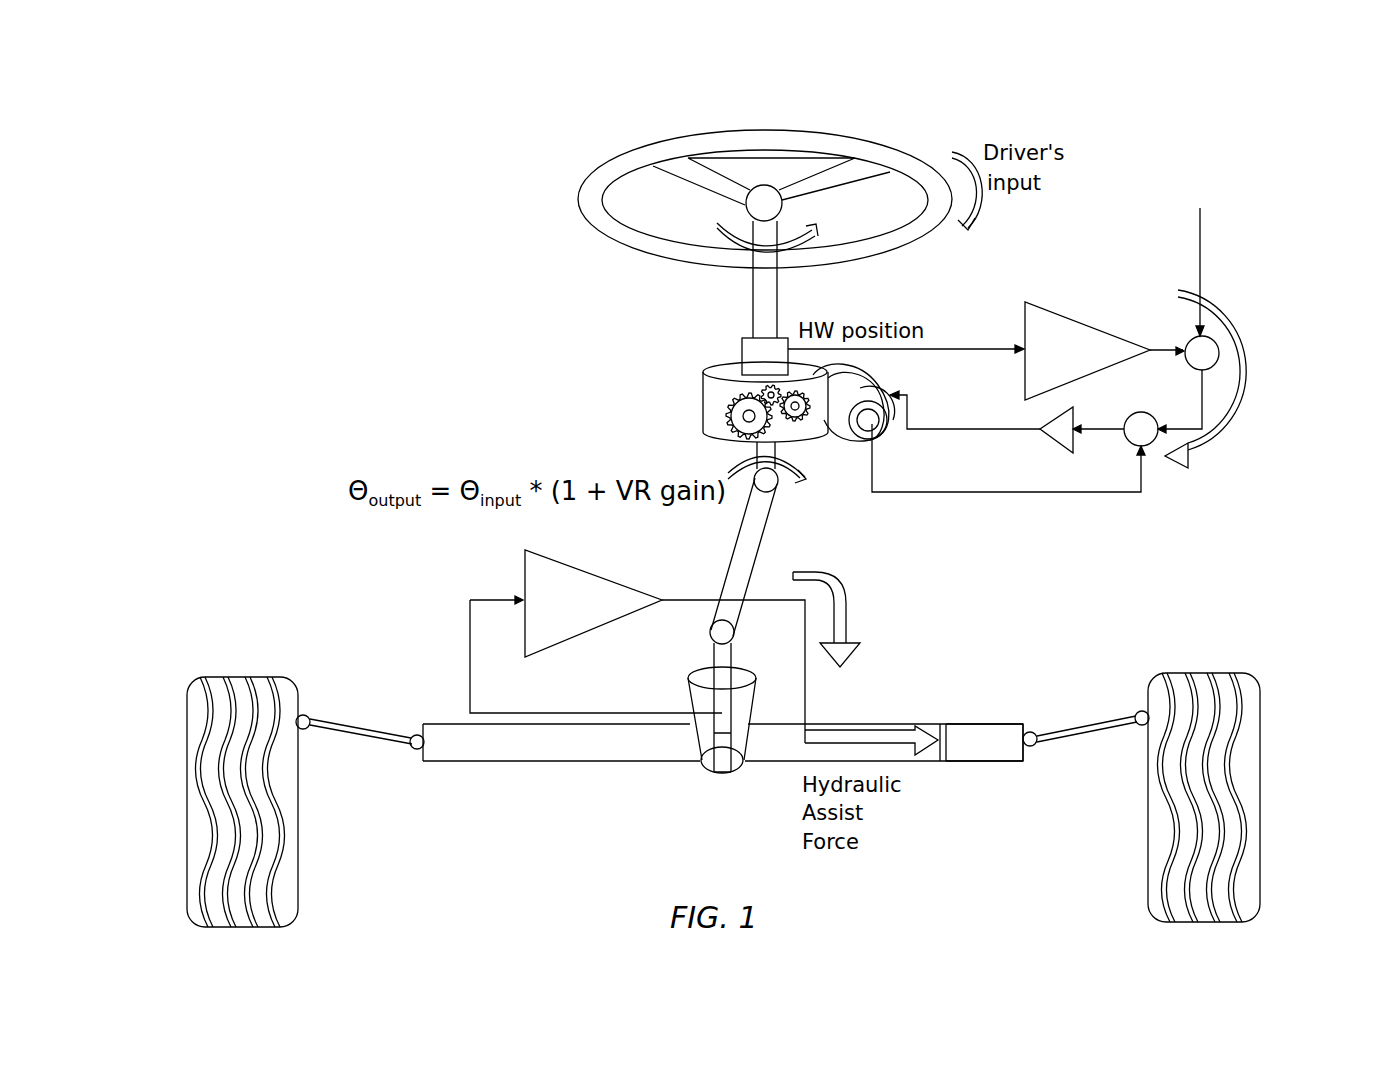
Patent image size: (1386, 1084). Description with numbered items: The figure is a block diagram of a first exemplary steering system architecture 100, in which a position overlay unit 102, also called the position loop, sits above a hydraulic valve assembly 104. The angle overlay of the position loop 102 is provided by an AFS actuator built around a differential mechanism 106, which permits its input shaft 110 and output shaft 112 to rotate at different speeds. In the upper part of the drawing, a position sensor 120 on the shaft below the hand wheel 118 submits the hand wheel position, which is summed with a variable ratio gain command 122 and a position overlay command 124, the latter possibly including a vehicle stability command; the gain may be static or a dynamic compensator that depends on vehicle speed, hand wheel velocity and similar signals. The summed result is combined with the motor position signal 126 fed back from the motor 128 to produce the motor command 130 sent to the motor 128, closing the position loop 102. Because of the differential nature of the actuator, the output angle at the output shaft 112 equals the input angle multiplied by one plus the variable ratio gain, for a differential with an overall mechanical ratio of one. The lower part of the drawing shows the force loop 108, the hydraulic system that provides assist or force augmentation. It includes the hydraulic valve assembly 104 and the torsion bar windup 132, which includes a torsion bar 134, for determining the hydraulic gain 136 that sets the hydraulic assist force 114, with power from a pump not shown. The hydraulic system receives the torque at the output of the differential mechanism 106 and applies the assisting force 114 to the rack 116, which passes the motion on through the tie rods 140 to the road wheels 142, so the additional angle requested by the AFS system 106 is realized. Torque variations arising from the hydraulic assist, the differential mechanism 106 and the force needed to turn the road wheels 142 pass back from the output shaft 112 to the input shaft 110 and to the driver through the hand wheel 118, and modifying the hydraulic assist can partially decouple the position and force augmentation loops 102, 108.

The steering system architecture 100 is at (335, 422).
The position overlay unit 102 is at (1190, 464).
The hydraulic valve assembly 104 is at (700, 768).
The differential mechanism 106 is at (707, 394).
The force loop 108 is at (846, 618).
The input shaft 110 is at (753, 284).
The output shaft 112 is at (760, 451).
The hydraulic assist force 114 is at (909, 758).
The rack 116 is at (995, 749).
The hand wheel 118 is at (808, 129).
The position sensor 120 is at (755, 349).
The variable ratio gain command 122 is at (1070, 328).
The position overlay command 124 is at (1250, 192).
The motor position signal 126 is at (1013, 520).
The motor 128 is at (870, 424).
The motor command 130 is at (983, 398).
The torsion bar windup 132 is at (587, 688).
The torsion bar 134 is at (724, 704).
The hydraulic gain 136 is at (587, 571).
The tie rods 140 is at (363, 733).
The road wheels 142 is at (186, 741).